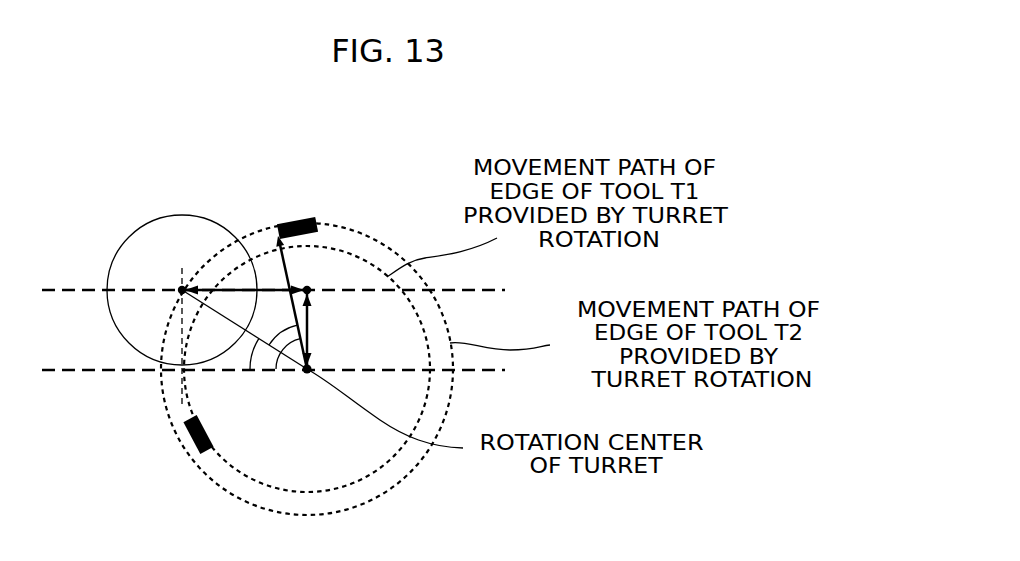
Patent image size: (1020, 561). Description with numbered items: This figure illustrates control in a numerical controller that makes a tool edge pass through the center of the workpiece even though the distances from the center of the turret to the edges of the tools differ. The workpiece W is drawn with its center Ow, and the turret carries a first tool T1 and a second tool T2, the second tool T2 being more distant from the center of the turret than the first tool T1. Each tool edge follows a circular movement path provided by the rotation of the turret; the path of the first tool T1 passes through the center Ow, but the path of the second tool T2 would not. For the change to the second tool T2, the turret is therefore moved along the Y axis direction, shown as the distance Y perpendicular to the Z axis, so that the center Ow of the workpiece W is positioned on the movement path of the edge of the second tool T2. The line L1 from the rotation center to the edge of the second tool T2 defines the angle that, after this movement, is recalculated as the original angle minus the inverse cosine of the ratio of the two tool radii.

The workpiece W is at (137, 261).
The center of the workpiece Ow is at (181, 291).
The line from turret rotation center to tool T2 edge L1 is at (270, 299).
The first tool T1 is at (192, 440).
The second tool T2 is at (303, 218).
The Y axis direction Y is at (309, 327).